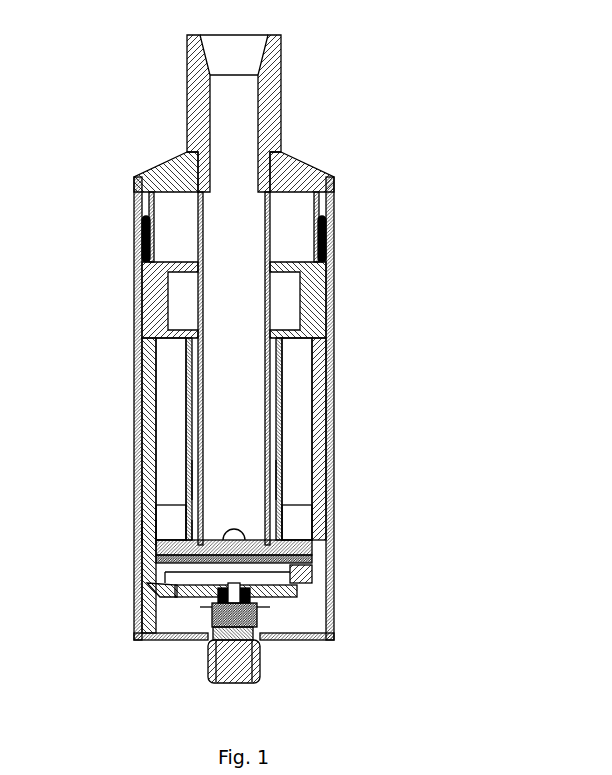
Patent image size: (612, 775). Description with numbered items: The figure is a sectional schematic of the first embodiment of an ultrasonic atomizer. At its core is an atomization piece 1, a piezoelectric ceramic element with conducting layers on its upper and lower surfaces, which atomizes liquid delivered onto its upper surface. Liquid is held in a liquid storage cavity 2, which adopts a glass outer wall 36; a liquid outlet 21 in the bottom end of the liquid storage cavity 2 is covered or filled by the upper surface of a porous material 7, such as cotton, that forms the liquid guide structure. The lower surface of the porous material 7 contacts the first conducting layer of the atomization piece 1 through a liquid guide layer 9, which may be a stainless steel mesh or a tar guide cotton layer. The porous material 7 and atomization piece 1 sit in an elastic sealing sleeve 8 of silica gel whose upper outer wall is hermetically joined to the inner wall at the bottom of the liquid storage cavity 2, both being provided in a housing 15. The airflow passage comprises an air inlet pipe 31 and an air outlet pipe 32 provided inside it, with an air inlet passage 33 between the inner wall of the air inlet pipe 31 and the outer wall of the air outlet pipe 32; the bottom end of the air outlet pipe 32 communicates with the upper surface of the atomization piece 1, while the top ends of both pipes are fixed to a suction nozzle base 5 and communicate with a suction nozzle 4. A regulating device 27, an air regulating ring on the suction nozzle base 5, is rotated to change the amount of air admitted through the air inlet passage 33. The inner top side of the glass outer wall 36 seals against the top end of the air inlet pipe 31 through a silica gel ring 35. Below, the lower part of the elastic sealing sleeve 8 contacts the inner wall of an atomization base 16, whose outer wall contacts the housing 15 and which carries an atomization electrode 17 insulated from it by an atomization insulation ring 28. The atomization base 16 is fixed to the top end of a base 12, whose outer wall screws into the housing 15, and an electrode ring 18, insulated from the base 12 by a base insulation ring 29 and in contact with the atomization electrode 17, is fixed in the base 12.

The atomization piece 1 is at (150, 565).
The liquid storage cavity 2 is at (172, 408).
The suction nozzle 4 is at (280, 95).
The suction nozzle base 5 is at (323, 168).
The porous material 7 is at (330, 562).
The elastic sealing sleeve 8 is at (330, 527).
The liquid guide layer 9 is at (140, 530).
The base 12 is at (212, 653).
The housing 15 is at (283, 508).
The atomization base 16 is at (168, 588).
The atomization electrode 17 is at (210, 612).
The electrode ring 18 is at (213, 643).
The liquid outlet 21 is at (190, 535).
The regulating device 27 is at (327, 257).
The atomization insulation ring 28 is at (210, 600).
The base insulation ring 29 is at (210, 670).
The air inlet pipe 31 is at (283, 473).
The air outlet pipe 32 is at (283, 431).
The air inlet passage 33 is at (190, 366).
The silica gel ring 35 is at (325, 320).
The glass outer wall 36 is at (330, 380).